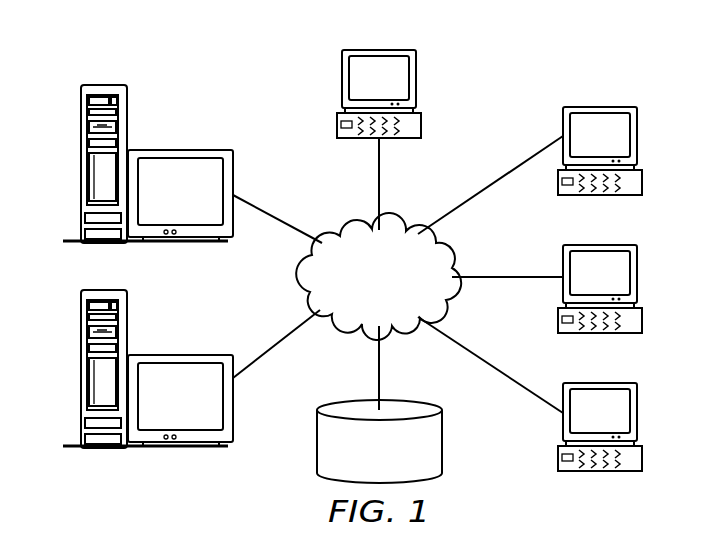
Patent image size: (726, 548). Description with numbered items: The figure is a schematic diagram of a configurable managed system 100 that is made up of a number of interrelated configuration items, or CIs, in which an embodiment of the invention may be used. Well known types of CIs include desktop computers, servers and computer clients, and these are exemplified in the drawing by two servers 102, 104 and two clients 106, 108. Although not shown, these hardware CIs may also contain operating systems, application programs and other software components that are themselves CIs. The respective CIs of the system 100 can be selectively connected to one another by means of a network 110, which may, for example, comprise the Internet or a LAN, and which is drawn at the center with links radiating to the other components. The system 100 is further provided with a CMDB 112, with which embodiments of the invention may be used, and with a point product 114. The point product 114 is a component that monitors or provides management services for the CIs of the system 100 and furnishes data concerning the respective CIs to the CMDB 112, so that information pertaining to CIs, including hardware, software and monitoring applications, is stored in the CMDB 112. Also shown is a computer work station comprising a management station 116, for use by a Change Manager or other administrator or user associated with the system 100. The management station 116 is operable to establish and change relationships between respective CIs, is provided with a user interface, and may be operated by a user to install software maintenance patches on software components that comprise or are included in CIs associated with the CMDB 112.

The configurable managed system 100 is at (520, 69).
The server 102 is at (81, 167).
The server 104 is at (81, 372).
The client 106 is at (342, 82).
The client 108 is at (637, 137).
The network 110 is at (350, 230).
The CMDB 112 is at (317, 450).
The point product 114 is at (637, 277).
The management station 116 is at (637, 415).